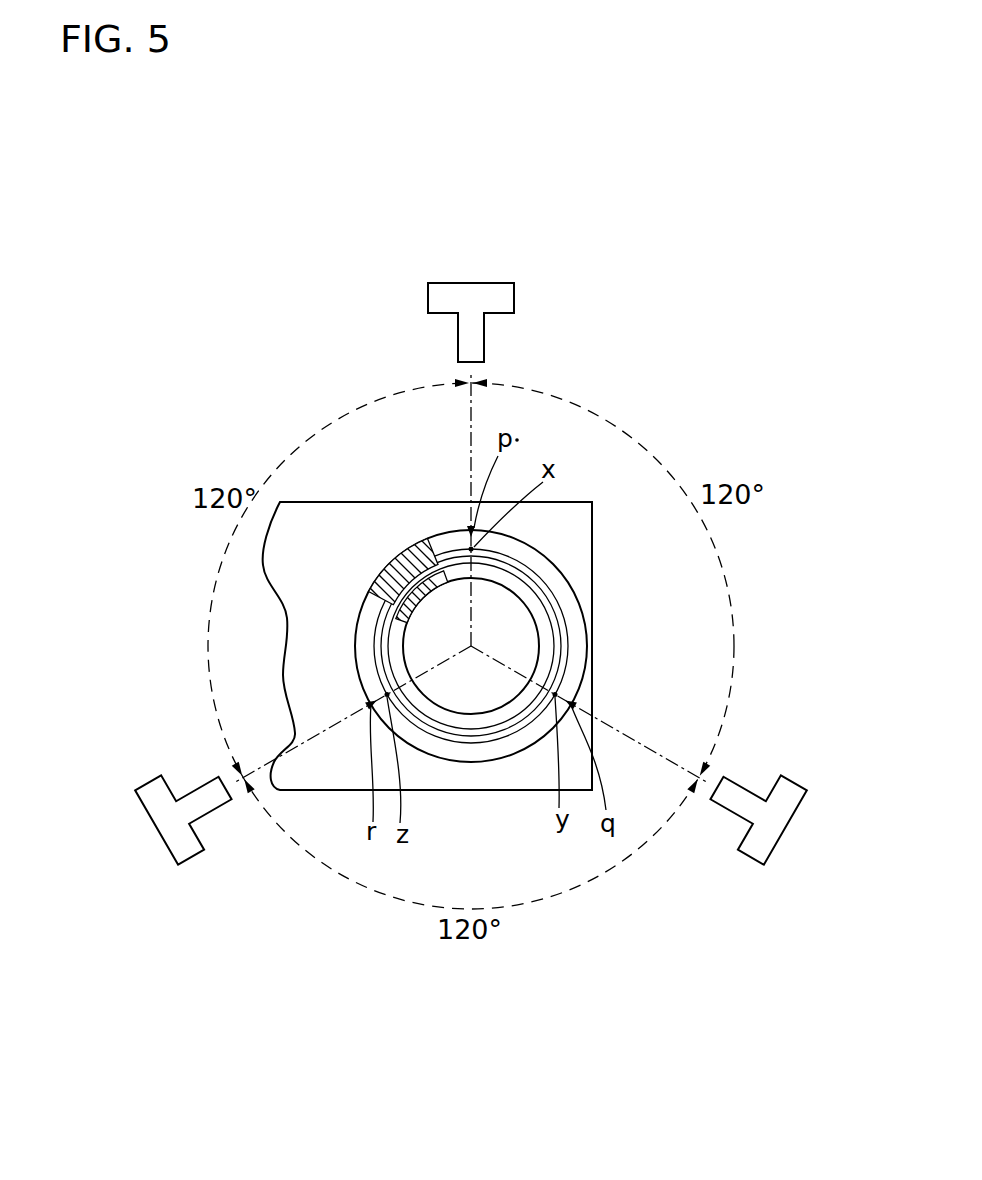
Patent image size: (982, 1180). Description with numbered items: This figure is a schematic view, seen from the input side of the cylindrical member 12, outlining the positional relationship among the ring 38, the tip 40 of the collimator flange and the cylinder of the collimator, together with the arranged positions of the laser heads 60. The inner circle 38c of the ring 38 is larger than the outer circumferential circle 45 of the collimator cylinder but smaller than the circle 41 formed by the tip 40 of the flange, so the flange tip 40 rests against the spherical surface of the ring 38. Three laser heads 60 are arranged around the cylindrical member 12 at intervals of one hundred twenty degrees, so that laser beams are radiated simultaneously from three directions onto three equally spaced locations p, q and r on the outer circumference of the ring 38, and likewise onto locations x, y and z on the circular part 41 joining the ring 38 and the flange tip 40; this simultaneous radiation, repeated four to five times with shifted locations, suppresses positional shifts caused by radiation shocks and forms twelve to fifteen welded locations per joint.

The cylindrical member 12 is at (592, 551).
The ring 38 is at (572, 660).
The inner circle 38c is at (388, 596).
The tip 40 is at (563, 620).
The circle 41 is at (429, 748).
The outer circumferential circle 45 is at (413, 575).
The laser head 60 is at (515, 293).